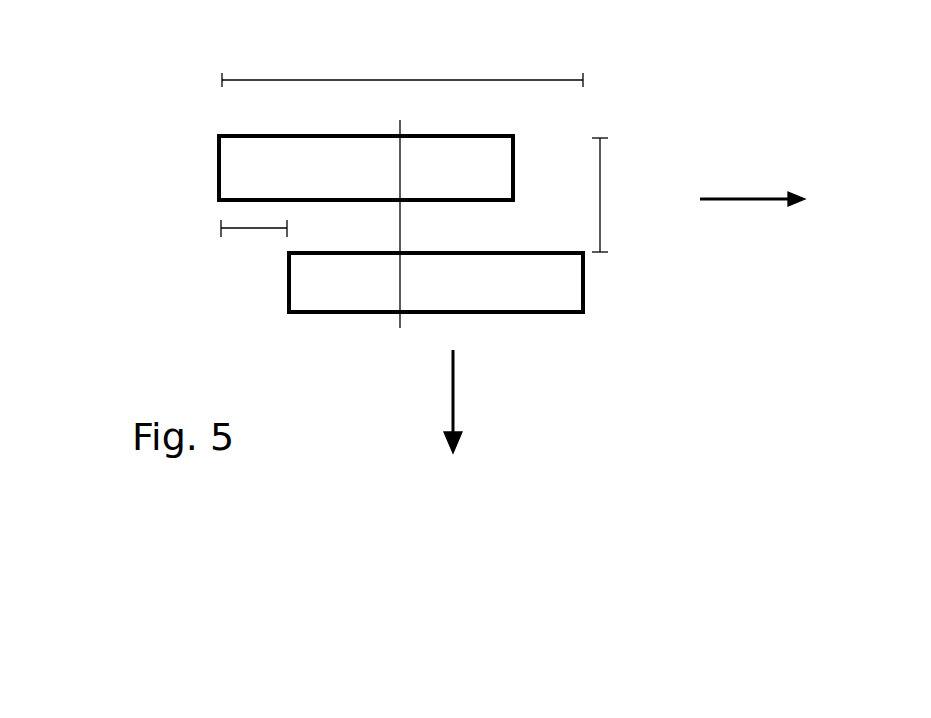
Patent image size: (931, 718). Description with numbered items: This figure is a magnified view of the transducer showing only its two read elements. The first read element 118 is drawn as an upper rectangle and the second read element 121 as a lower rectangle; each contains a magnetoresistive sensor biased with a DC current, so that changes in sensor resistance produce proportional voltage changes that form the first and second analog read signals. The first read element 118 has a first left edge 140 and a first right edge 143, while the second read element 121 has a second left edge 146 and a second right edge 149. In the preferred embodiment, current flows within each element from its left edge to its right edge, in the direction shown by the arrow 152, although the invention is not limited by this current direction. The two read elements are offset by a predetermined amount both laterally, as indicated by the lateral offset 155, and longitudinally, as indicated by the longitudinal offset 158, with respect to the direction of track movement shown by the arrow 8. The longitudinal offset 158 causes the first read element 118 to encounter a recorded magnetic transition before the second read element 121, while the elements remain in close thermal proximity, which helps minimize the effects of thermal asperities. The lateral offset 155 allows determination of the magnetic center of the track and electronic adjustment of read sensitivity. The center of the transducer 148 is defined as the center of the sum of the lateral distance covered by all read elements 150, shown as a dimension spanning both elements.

The arrow indicating track movement direction 8 is at (455, 392).
The first read element 118 is at (207, 151).
The second read element 121 is at (583, 278).
The first left edge 140 is at (219, 166).
The first right edge 143 is at (513, 164).
The second left edge 146 is at (289, 293).
The center of the transducer 148 is at (397, 318).
The second right edge 149 is at (583, 300).
The lateral distance covered by all read elements 150 is at (490, 80).
The arrow indicating direction of current flow 152 is at (745, 200).
The lateral offset 155 is at (253, 228).
The longitudinal offset 158 is at (600, 197).